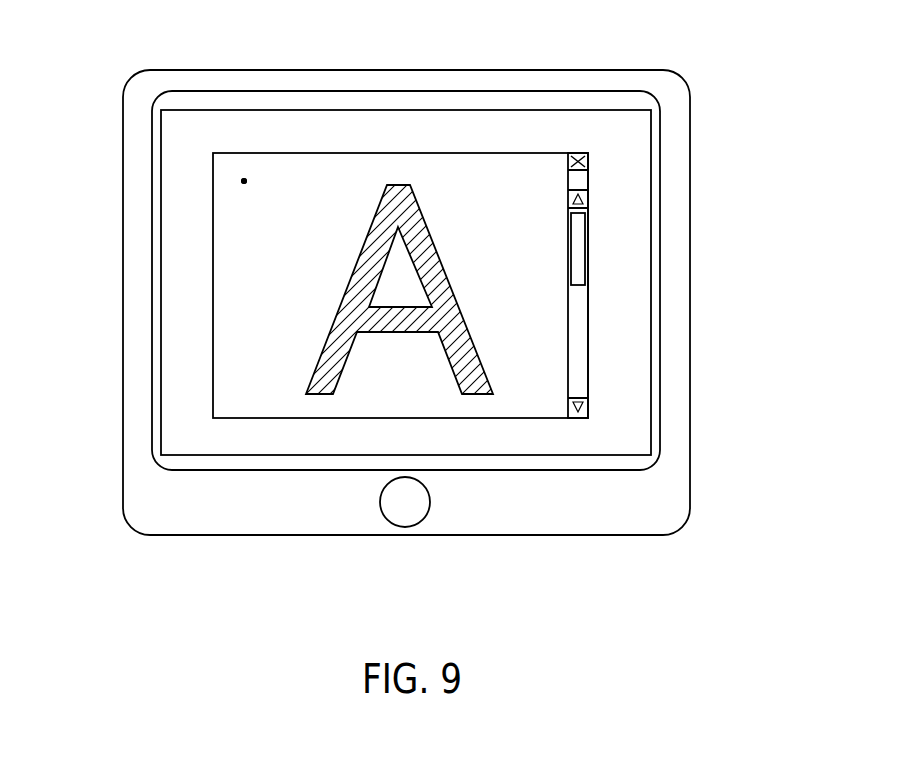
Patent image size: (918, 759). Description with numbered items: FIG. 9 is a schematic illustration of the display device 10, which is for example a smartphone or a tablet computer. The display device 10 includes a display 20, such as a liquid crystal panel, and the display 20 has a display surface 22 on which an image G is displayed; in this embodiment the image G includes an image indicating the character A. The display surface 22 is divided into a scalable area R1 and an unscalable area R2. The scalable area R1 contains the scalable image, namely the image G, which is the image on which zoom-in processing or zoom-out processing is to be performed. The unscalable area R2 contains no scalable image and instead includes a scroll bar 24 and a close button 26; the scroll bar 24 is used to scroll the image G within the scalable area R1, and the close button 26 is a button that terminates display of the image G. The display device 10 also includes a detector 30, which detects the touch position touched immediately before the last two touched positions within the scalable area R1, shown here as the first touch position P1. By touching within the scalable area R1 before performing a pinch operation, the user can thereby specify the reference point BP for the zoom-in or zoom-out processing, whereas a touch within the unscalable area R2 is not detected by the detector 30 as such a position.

The display device 10 is at (707, 70).
The display 20 is at (620, 207).
The display surface 22 is at (620, 247).
The scroll bar 24 is at (607, 295).
The close button 26 is at (578, 160).
The detector 30 is at (620, 348).
The image G is at (212, 272).
The scalable area R1 is at (435, 177).
The unscalable area R2 is at (602, 172).
The first touch position P1 is at (244, 180).
The reference point BP is at (244, 180).